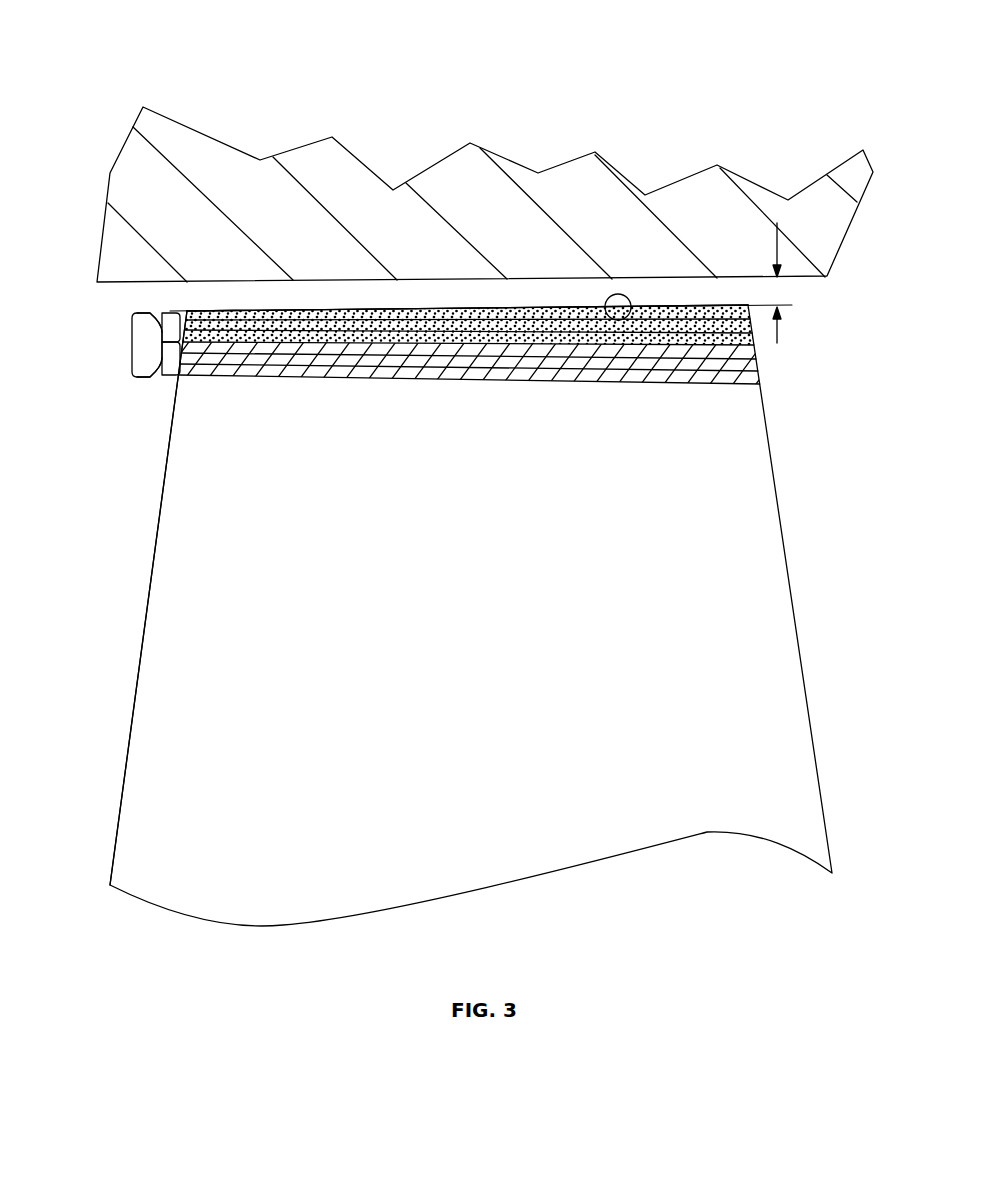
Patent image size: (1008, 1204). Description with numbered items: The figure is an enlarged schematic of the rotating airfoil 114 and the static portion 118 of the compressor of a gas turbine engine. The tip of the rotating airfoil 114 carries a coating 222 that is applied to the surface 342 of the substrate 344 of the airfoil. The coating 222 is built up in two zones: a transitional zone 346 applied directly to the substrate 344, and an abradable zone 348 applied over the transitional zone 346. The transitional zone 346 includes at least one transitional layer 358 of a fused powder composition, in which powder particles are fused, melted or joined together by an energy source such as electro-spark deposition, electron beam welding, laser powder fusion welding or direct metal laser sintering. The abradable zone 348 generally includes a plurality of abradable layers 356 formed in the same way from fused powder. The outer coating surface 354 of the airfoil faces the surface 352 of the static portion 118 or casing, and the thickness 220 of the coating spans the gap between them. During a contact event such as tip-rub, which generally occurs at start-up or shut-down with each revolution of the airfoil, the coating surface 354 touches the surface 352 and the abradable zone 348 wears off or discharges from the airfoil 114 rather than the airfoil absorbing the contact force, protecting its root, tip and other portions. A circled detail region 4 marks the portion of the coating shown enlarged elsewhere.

The static portion 118 is at (468, 221).
The rotating airfoil 114 is at (511, 657).
The coating 222 is at (574, 297).
The strip thickness 220 is at (778, 333).
The surface of the substrate 342 is at (438, 383).
The substrate 344 is at (165, 485).
The transitional zone 346 is at (162, 358).
The abradable zone 348 is at (137, 313).
The surface of the static portion 352 is at (802, 287).
The coating surface 354 is at (230, 296).
The abradable layer 356 is at (315, 328).
The transitional layer 358 is at (753, 360).
The detail view indicator 4 is at (626, 299).